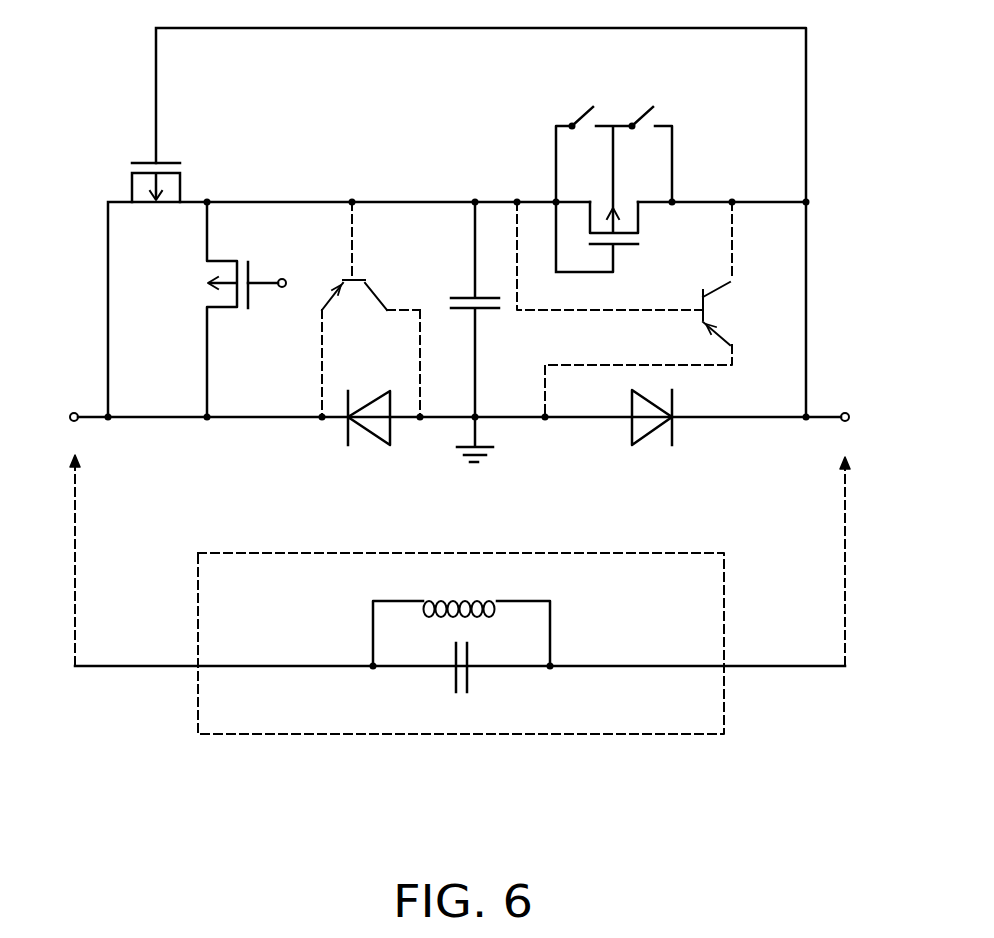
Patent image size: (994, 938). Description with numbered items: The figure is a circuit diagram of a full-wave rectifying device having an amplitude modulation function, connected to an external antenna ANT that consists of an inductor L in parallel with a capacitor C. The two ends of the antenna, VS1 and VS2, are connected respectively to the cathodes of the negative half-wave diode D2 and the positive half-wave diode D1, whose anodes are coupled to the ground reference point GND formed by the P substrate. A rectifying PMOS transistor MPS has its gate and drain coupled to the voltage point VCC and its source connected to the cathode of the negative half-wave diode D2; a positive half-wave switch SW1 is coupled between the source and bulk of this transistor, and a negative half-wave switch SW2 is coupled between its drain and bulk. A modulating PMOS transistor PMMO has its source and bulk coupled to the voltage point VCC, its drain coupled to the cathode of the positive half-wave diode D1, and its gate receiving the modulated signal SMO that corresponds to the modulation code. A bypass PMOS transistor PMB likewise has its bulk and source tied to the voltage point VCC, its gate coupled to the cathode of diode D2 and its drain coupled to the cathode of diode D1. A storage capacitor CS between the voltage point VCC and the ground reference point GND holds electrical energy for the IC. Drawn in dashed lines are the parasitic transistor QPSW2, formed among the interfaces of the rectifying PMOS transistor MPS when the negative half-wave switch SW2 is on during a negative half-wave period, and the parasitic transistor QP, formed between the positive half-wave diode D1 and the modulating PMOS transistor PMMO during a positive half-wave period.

The bypass PMOS transistor PMB is at (189, 165).
The modulating PMOS transistor PMMO is at (249, 309).
The modulated signal SMO is at (276, 265).
The parasitic transistor QP is at (371, 309).
The positive half-wave diode D1 is at (369, 441).
The voltage point VCC is at (474, 173).
The capacitor CS is at (463, 309).
The ground reference point GND is at (462, 460).
The rectifying PMOS transistor MPS is at (614, 207).
The positive half-wave switch SW1 is at (661, 99).
The negative half-wave switch SW2 is at (569, 99).
The parasitic transistor QPSW2 is at (656, 309).
The negative half-wave diode D2 is at (652, 442).
The antenna end VS1 is at (871, 533).
The antenna end VS2 is at (49, 532).
The antenna ANT is at (460, 643).
The inductor L is at (461, 615).
The capacitor C is at (448, 681).